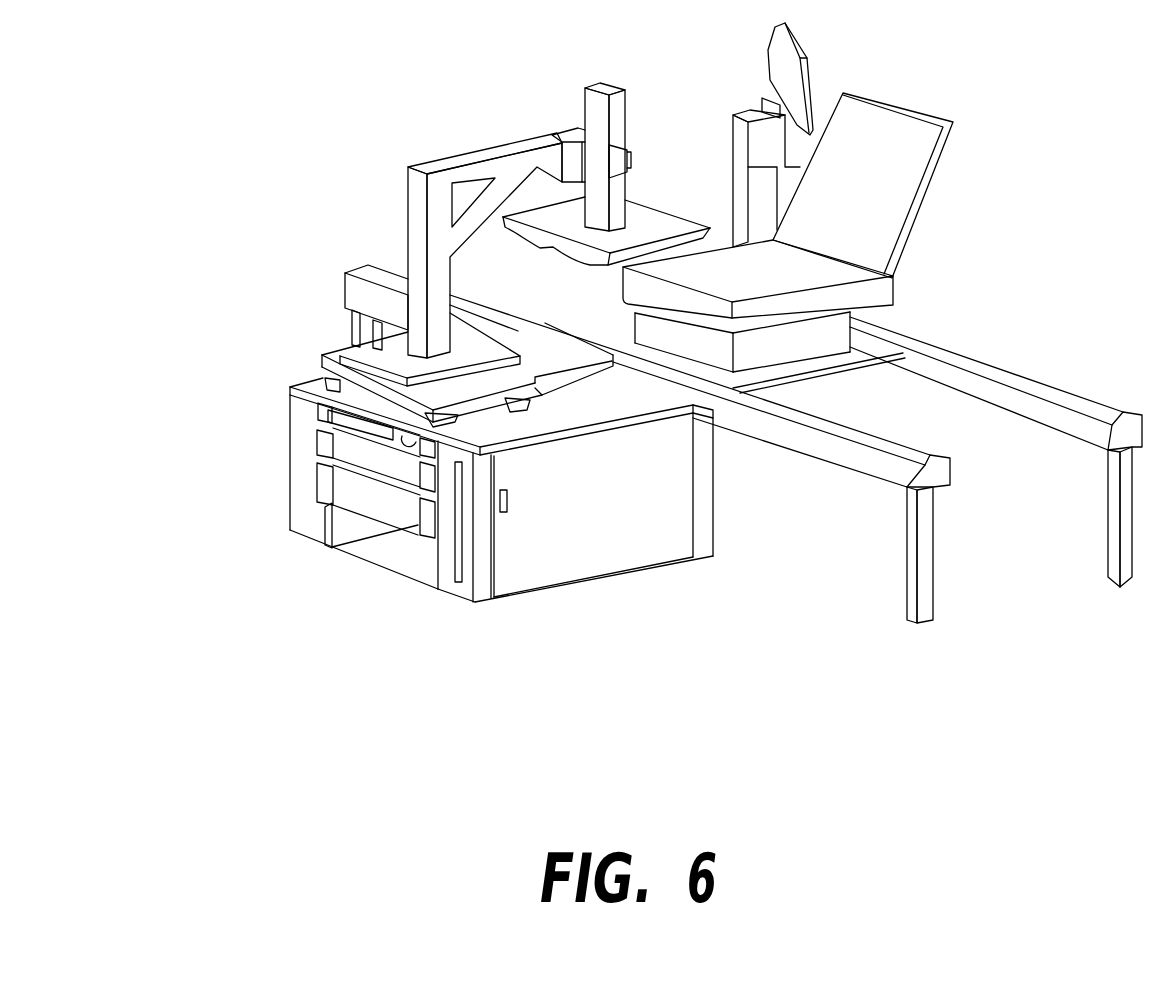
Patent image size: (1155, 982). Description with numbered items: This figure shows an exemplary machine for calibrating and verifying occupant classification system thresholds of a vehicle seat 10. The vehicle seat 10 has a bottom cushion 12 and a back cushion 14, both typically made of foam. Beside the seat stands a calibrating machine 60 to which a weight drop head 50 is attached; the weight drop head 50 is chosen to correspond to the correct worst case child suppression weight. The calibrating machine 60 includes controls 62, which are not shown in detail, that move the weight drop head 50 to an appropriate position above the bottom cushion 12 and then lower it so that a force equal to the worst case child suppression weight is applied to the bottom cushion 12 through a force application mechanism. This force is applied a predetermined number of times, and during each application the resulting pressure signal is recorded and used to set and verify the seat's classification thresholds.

The vehicle seat 10 is at (1000, 245).
The bottom cushion 12 is at (863, 295).
The back cushion 14 is at (923, 186).
The weight drop head 50 is at (662, 217).
The calibrating machine 60 is at (377, 590).
The controls 62 is at (293, 520).